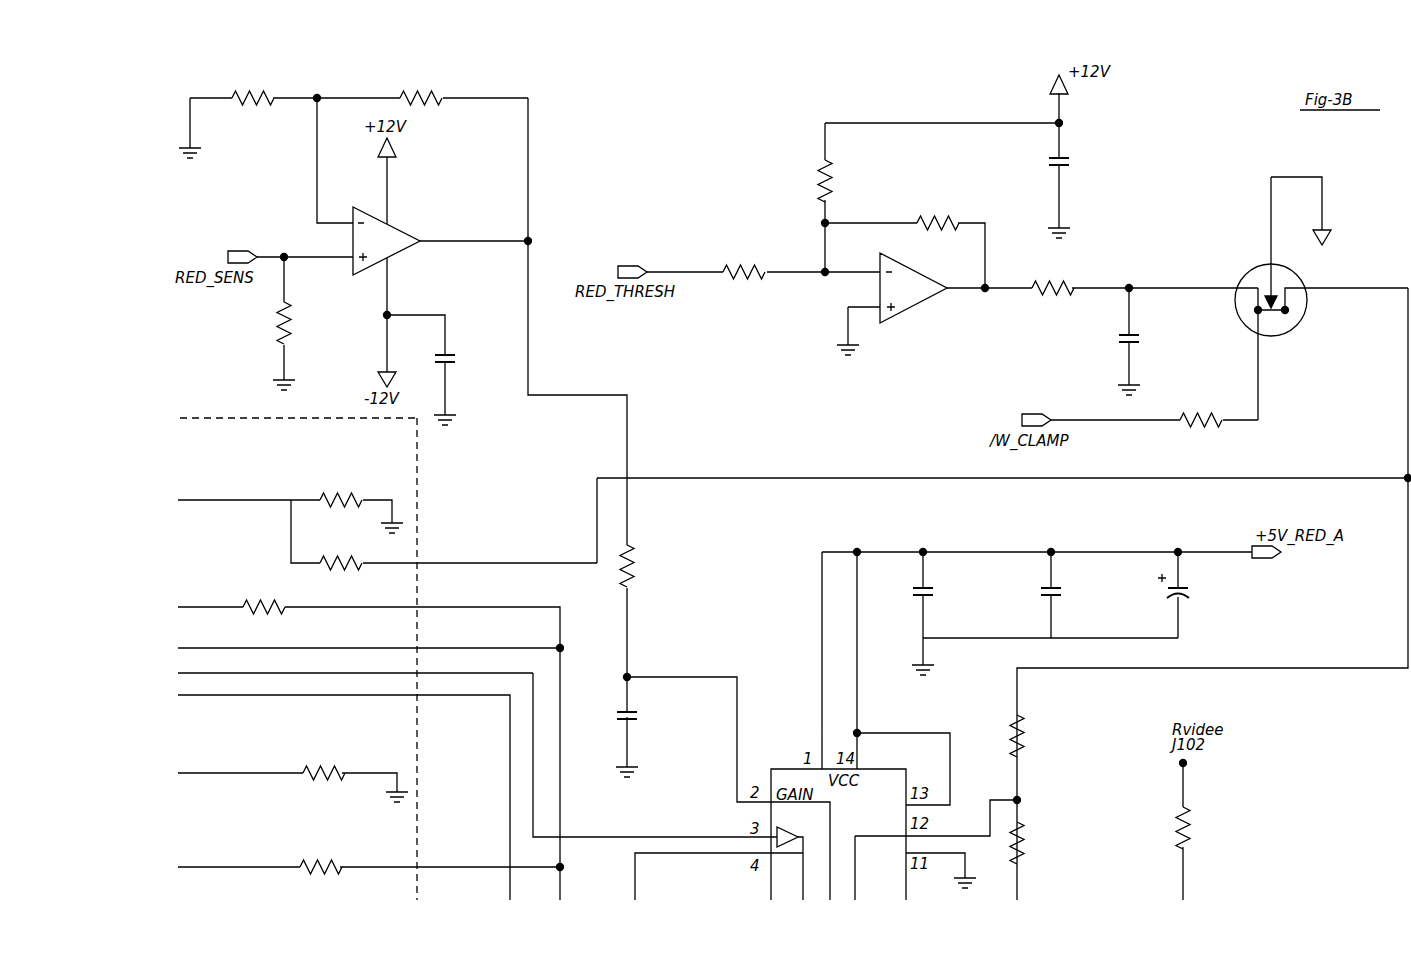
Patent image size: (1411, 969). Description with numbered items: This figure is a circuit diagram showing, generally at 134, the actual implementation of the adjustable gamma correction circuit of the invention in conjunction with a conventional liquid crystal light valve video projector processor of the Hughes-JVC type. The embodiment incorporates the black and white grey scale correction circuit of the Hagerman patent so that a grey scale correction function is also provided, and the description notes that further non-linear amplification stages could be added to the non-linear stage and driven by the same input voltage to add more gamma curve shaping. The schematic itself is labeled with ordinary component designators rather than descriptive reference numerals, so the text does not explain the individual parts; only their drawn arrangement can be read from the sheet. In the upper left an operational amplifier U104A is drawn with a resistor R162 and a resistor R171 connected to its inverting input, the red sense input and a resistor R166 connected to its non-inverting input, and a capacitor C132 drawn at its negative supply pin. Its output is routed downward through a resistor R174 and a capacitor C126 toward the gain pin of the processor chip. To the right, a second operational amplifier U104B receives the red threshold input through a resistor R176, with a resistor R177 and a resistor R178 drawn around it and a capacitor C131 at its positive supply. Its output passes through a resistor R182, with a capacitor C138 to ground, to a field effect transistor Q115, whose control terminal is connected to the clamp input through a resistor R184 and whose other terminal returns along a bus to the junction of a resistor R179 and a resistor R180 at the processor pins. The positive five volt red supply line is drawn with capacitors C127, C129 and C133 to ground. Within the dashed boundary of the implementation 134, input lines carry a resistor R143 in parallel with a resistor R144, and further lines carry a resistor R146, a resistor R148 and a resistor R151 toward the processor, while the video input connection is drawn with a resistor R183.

The adjustable gamma circuit implementation 134 is at (232, 418).
The resistor 10K R162 is at (253, 100).
The resistor 1K R171 is at (422, 100).
The resistor 330 R166 is at (305, 321).
The operational amplifier TL082P U104A is at (395, 242).
The capacitor 0.1uF C132 is at (468, 360).
The resistor 220 R174 is at (648, 566).
The capacitor 470PF C126 is at (653, 710).
The resistor 330 R176 is at (746, 272).
The resistor 6.8K R177 is at (846, 179).
The capacitor 0.1uF C131 is at (1083, 165).
The resistor 330 R178 is at (938, 223).
The operational amplifier TL082P U104B is at (909, 307).
The resistor 220 R182 is at (1053, 288).
The capacitor 470PF C138 is at (1155, 338).
The transistor Q115 is at (1321, 298).
The resistor 2.2K R179 is at (1039, 735).
The resistor 806 R180 is at (1040, 834).
The resistor 1K R184 is at (1202, 420).
The resistor 15K R144 is at (341, 563).
The capacitor 0.1uF C127 is at (946, 588).
The capacitor 0.1uF C129 is at (1074, 588).
The capacitor 22uF C133 is at (1195, 588).
The resistor 220 R143 is at (341, 500).
The resistor 3.3K R146 is at (264, 607).
The resistor 220 R148 is at (324, 773).
The resistor 1K R151 is at (321, 867).
The resistor 1K R183 is at (1206, 828).